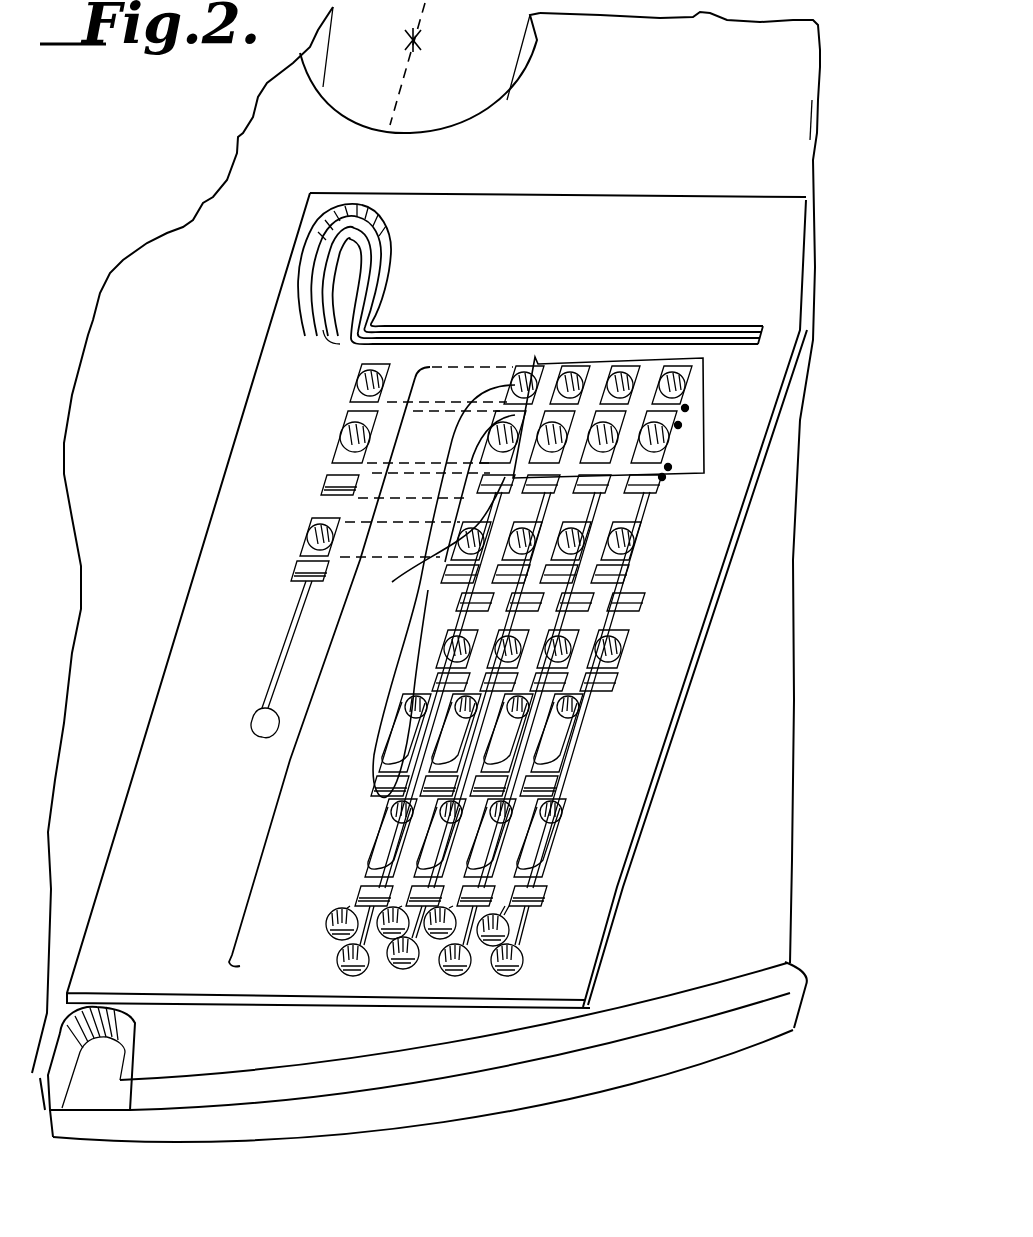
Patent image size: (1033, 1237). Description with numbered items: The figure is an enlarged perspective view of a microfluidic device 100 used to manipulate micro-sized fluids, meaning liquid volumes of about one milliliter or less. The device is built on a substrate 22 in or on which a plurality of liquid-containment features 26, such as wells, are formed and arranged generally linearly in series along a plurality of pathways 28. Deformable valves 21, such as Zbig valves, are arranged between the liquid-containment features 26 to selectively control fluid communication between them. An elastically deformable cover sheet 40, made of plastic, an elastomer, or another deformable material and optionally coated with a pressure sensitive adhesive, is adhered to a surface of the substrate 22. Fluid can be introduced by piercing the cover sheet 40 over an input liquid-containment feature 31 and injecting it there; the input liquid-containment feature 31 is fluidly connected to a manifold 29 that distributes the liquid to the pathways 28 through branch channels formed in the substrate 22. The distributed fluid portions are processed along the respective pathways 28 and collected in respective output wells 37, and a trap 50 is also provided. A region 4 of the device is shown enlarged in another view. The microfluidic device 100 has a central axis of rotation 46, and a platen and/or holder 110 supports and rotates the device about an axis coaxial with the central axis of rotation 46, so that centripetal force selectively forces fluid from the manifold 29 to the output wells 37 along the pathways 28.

The region 4 is at (654, 357).
The deformable valves 21 is at (630, 622).
The substrate 22 is at (750, 808).
The liquid-containment features 26 is at (440, 591).
The pathways 28 is at (280, 783).
The manifold 29 is at (435, 326).
The input liquid-containment feature 31 is at (327, 227).
The output wells 37 is at (337, 952).
The cover sheet 40 is at (302, 1002).
The central axis of rotation 46 is at (409, 38).
The trap 50 is at (662, 477).
The microfluidic device 100 is at (793, 1028).
The platen and/or holder 110 is at (625, 1066).